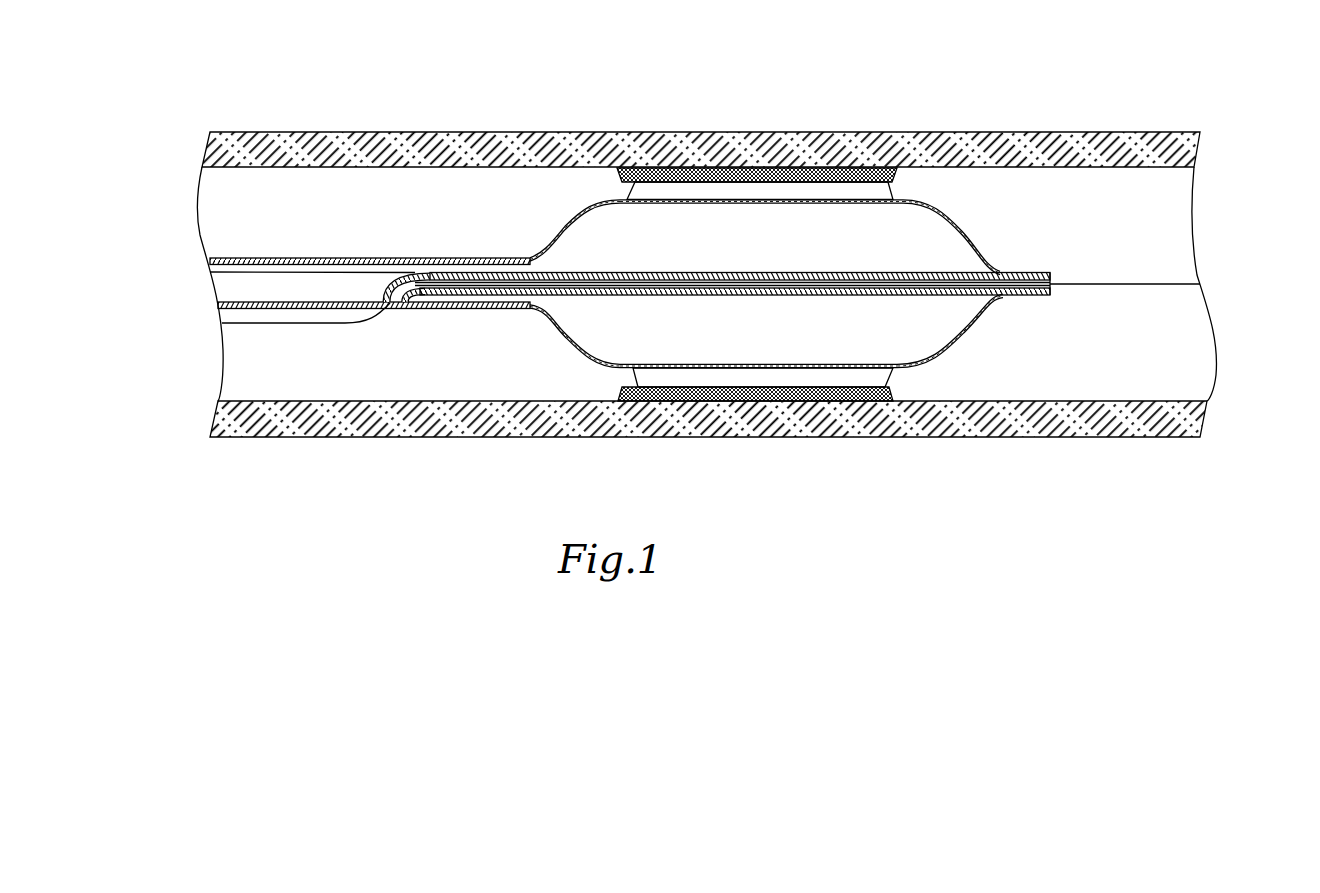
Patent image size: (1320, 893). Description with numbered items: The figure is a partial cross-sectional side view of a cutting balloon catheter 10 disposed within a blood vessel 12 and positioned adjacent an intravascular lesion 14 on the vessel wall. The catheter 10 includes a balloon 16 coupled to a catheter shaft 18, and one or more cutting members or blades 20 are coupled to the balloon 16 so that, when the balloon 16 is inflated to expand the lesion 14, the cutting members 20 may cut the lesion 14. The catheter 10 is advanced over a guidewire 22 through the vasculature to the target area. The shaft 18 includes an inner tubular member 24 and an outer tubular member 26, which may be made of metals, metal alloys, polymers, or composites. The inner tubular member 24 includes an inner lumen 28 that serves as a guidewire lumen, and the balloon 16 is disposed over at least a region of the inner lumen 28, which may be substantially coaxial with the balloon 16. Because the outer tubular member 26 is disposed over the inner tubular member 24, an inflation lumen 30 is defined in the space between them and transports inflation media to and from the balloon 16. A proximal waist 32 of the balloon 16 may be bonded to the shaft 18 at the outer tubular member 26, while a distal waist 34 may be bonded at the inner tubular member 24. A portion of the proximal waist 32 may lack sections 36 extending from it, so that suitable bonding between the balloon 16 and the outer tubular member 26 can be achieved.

The catheter 10 is at (386, 238).
The blood vessel 12 is at (642, 148).
The intravascular lesion 14 is at (726, 167).
The balloon 16 is at (570, 208).
The catheter shaft 18 is at (223, 250).
The cutting members 20 is at (790, 195).
The guidewire 22 is at (1153, 284).
The inner tubular member 24 is at (903, 272).
The outer tubular member 26 is at (272, 258).
The inner lumen 28 is at (1050, 272).
The inflation lumen 30 is at (442, 258).
The proximal waist 32 is at (543, 243).
The distal waist 34 is at (962, 233).
The sections 36 is at (512, 308).